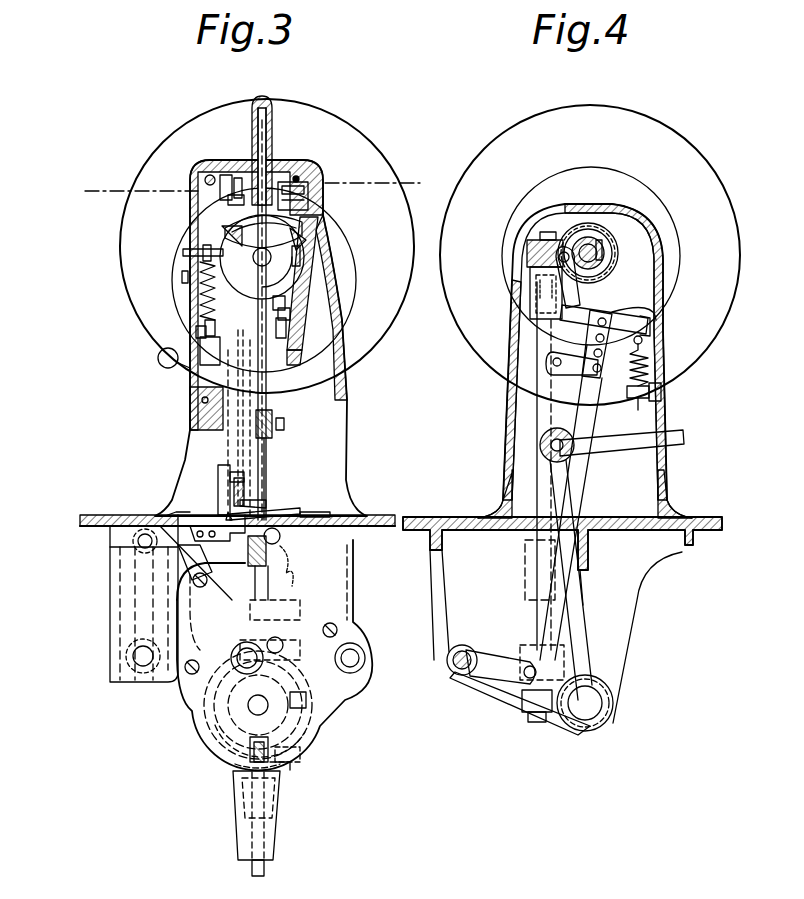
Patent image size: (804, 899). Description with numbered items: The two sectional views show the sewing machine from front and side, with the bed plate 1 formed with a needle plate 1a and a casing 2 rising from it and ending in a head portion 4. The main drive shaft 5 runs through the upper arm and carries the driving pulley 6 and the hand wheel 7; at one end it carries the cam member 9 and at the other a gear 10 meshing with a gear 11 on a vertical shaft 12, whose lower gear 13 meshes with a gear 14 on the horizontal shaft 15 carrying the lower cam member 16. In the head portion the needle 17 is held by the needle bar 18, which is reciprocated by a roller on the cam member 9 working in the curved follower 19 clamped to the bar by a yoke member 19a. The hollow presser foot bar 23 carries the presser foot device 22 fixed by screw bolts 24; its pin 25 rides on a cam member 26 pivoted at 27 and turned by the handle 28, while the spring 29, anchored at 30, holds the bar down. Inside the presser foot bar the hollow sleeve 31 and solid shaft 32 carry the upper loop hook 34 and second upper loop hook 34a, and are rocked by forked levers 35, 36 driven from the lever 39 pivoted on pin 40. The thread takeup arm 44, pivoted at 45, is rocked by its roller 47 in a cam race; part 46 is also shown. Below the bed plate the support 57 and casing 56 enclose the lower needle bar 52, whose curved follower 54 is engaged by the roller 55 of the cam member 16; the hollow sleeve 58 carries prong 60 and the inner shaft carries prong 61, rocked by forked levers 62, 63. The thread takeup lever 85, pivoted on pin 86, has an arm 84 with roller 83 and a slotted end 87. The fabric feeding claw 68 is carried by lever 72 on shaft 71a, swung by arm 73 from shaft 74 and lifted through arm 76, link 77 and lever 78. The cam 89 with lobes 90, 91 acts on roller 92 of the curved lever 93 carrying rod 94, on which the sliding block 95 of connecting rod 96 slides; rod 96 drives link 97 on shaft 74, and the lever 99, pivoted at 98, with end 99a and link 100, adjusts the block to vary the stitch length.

In FIG. 3, the bed plate 1 is at (232, 505).
In FIG. 4, the bed plate 1 is at (562, 529).
In FIG. 3, the needle plate 1a is at (322, 515).
In FIG. 3, the casing 2 is at (346, 430).
In FIG. 4, the casing 2 is at (670, 492).
In FIG. 3, the head portion 4 is at (300, 349).
In FIG. 3, the main drive shaft 5 is at (97, 190).
In FIG. 4, the main drive shaft 5 is at (610, 258).
In FIG. 3, the driving pulley 6 is at (330, 226).
In FIG. 4, the driving pulley 6 is at (652, 195).
In FIG. 4, the hand wheel 7 is at (688, 147).
In FIG. 3, the cam member 9 is at (305, 237).
In FIG. 4, the gear 10 is at (650, 237).
In FIG. 4, the gear 11 is at (528, 243).
In FIG. 4, the vertical shaft 12 is at (545, 391).
In FIG. 4, the gear 13 is at (525, 713).
In FIG. 4, the gear 14 is at (610, 694).
In FIG. 3, the horizontal shaft 15 is at (320, 739).
In FIG. 4, the horizontal shaft 15 is at (590, 711).
In FIG. 3, the cam member 16 is at (232, 733).
In FIG. 3, the needle 17 is at (266, 454).
In FIG. 3, the needle bar 18 is at (270, 361).
In FIG. 3, the curved follower 19 is at (300, 228).
In FIG. 3, the yoke member 19a is at (232, 233).
In FIG. 3, the presser foot device 22 is at (278, 513).
In FIG. 3, the presser foot bar 23 is at (238, 437).
In FIG. 3, the screw bolts 24 is at (220, 477).
In FIG. 3, the pin 25 is at (200, 252).
In FIG. 3, the cam member 26 is at (196, 263).
In FIG. 3, the pivot 27 is at (186, 279).
In FIG. 3, the handle 28 is at (170, 363).
In FIG. 3, the spring 29 is at (200, 299).
In FIG. 3, the spring anchor 30 is at (196, 333).
In FIG. 3, the hollow sleeve 31 is at (230, 447).
In FIG. 3, the solid shaft 32 is at (232, 459).
In FIG. 3, the upper loop hook 34 is at (246, 498).
In FIG. 3, the second upper loop hook 34a is at (268, 503).
In FIG. 3, the forked lever 35 is at (222, 172).
In FIG. 3, the forked lever 36 is at (230, 207).
In FIG. 3, the lever 39 is at (296, 176).
In FIG. 3, the pin 40 is at (310, 192).
In FIG. 3, the thread takeup arm 44 is at (290, 331).
In FIG. 3, the pivot 45 is at (290, 317).
In FIG. 3, the set screw 46 is at (285, 301).
In FIG. 3, the roller 47 is at (298, 267).
In FIG. 3, the needle bar 52 is at (262, 586).
In FIG. 3, the curved follower 54 is at (320, 699).
In FIG. 3, the roller 55 is at (235, 699).
In FIG. 3, the casing 56 is at (316, 753).
In FIG. 4, the support 57 is at (638, 596).
In FIG. 3, the hollow sleeve 58 is at (232, 597).
In FIG. 3, the prong 60 is at (244, 541).
In FIG. 3, the prong 61 is at (280, 533).
In FIG. 3, the forked lever 62 is at (240, 651).
In FIG. 3, the forked lever 63 is at (235, 683).
In FIG. 3, the fabric feeding claw 68 is at (228, 510).
In FIG. 3, the shaft 71a is at (138, 543).
In FIG. 3, the lever 72 is at (198, 557).
In FIG. 3, the arm 73 is at (130, 600).
In FIG. 3, the shaft 74 is at (134, 656).
In FIG. 4, the shaft 74 is at (452, 669).
In FIG. 3, the arm 76 is at (180, 509).
In FIG. 3, the link 77 is at (290, 612).
In FIG. 3, the lever 78 is at (340, 690).
In FIG. 3, the roller 83 is at (295, 716).
In FIG. 3, the arm 84 is at (290, 753).
In FIG. 3, the thread takeup lever 85 is at (282, 791).
In FIG. 3, the pin 86 is at (282, 767).
In FIG. 3, the end 87 is at (240, 760).
In FIG. 4, the cam 89 is at (590, 236).
In FIG. 4, the lobe 90 is at (612, 235).
In FIG. 4, the lobe 91 is at (570, 250).
In FIG. 4, the roller 92 is at (528, 254).
In FIG. 4, the curved lever 93 is at (582, 302).
In FIG. 4, the rod 94 is at (652, 318).
In FIG. 4, the sliding block 95 is at (618, 306).
In FIG. 4, the connecting rod 96 is at (585, 410).
In FIG. 4, the link 97 is at (515, 655).
In FIG. 4, the pivot 98 is at (540, 446).
In FIG. 4, the lever 99 is at (622, 456).
In FIG. 4, the end of lever 99a is at (680, 435).
In FIG. 4, the link 100 is at (560, 352).